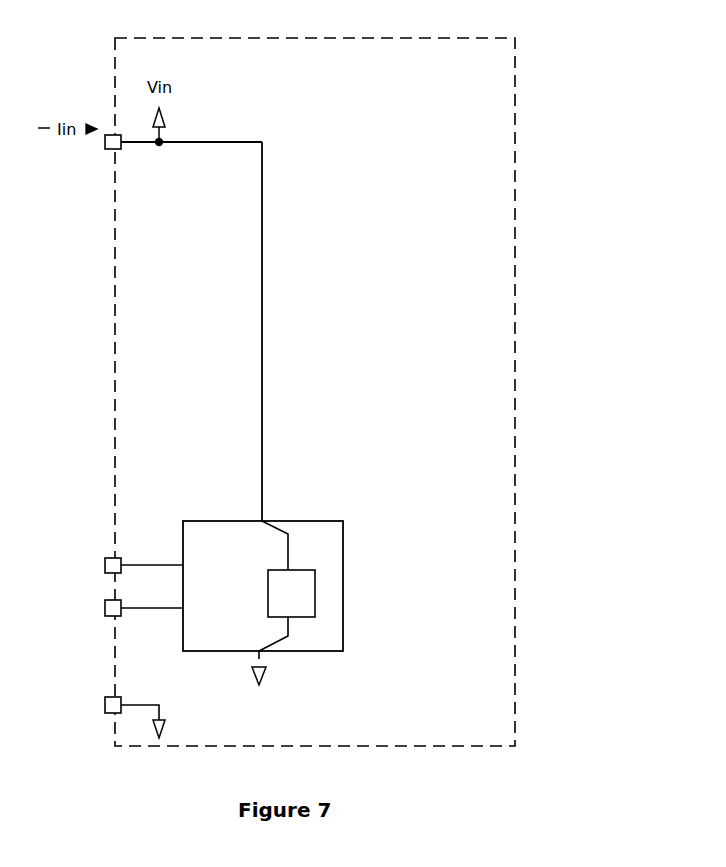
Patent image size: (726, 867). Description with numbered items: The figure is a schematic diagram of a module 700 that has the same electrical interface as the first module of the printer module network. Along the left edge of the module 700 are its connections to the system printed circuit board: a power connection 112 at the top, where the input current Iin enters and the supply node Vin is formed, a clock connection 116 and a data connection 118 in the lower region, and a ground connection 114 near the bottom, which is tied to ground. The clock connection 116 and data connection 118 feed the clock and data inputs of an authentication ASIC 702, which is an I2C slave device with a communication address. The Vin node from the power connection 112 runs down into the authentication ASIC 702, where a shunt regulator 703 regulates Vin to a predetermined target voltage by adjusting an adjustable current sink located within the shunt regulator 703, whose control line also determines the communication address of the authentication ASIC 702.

The module 700 is at (598, 203).
The power connection 112 is at (112, 135).
The ground connection 114 is at (108, 697).
The clock connection 116 is at (118, 558).
The data connection 118 is at (121, 614).
The authentication ASIC 702 is at (315, 652).
The shunt regulator 703 is at (315, 607).